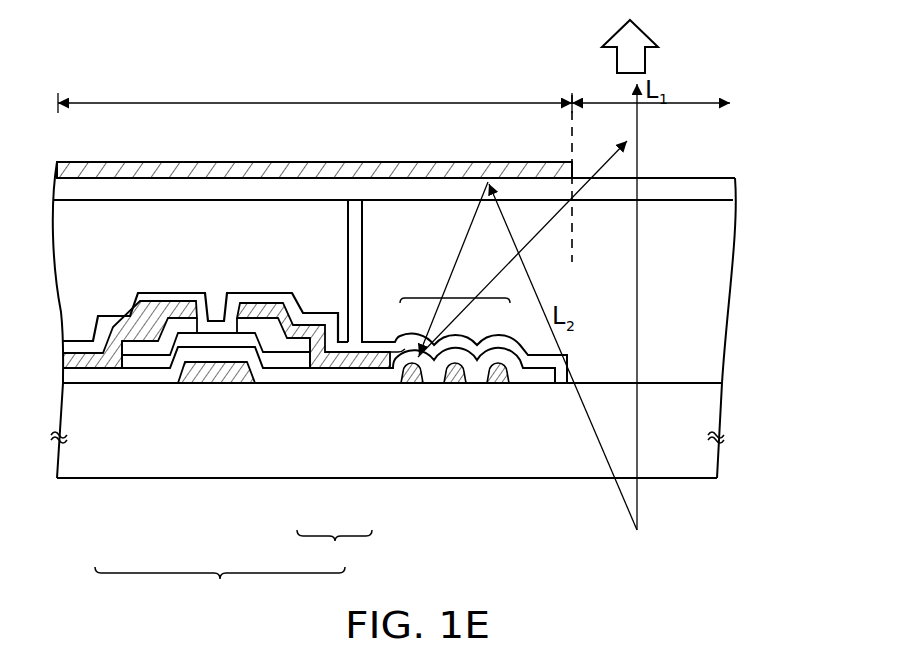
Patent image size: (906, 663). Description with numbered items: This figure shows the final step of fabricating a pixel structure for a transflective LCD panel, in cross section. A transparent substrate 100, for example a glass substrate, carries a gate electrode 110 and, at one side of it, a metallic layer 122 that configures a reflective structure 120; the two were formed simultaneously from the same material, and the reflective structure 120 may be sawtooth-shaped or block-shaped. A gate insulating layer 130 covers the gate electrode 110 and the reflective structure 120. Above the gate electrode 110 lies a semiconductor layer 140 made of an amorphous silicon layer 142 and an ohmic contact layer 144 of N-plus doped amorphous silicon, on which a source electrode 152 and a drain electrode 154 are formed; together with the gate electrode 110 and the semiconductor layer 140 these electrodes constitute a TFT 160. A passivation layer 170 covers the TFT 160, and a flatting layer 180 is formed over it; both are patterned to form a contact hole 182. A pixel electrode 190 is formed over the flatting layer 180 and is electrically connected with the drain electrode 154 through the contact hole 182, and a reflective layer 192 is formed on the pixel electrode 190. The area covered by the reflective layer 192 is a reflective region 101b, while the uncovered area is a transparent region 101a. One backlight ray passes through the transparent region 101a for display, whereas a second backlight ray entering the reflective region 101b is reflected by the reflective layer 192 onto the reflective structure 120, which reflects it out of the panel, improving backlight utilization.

The transparent substrate 100 is at (721, 382).
The transparent region 101a is at (651, 86).
The reflective region 101b is at (315, 91).
The gate electrode 110 is at (189, 366).
The reflective structure 120 is at (452, 297).
The metallic layer 122 is at (417, 383).
The gate insulating layer 130 is at (88, 378).
The semiconductor layer 140 is at (334, 549).
The amorphous silicon layer 142 is at (280, 362).
The ohmic contact layer 144 is at (300, 345).
The source electrode 152 is at (167, 315).
The drain electrode 154 is at (243, 313).
The TFT 160 is at (220, 588).
The passivation layer 170 is at (182, 296).
The flatting layer 180 is at (719, 248).
The contact hole 182 is at (351, 312).
The pixel electrode 190 is at (736, 182).
The reflective layer 192 is at (536, 162).